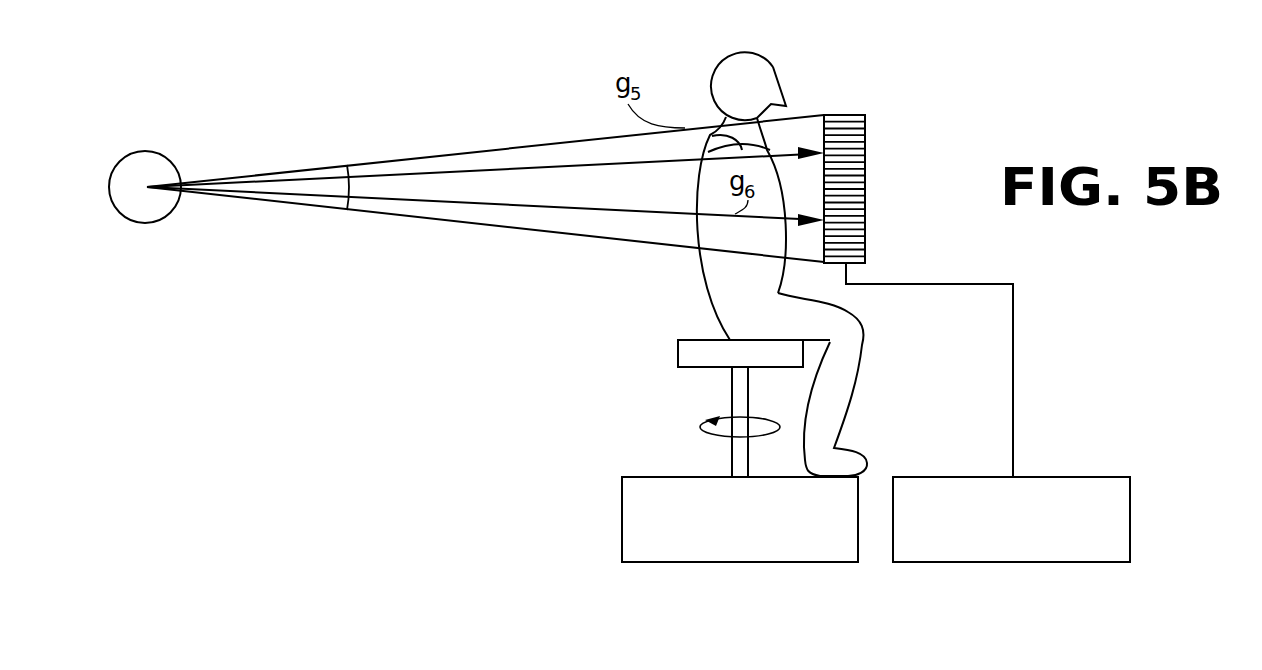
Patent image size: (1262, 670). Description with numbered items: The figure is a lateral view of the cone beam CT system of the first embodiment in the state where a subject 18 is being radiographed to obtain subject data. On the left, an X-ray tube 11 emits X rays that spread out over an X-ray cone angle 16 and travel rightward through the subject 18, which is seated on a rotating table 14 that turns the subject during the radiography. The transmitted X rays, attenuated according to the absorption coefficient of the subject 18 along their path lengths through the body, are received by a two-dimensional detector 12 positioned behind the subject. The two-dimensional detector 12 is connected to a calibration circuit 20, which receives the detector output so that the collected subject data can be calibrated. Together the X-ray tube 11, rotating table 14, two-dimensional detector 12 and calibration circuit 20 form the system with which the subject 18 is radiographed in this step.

The X-ray tube 11 is at (148, 151).
The X-ray cone angle 16 is at (355, 168).
The subject 18 is at (741, 51).
The two-dimensional detector 12 is at (866, 150).
The rotating table 14 is at (740, 564).
The calibration circuit 20 is at (1012, 564).